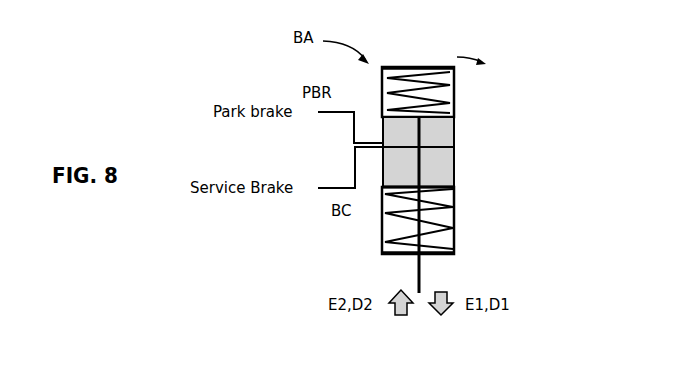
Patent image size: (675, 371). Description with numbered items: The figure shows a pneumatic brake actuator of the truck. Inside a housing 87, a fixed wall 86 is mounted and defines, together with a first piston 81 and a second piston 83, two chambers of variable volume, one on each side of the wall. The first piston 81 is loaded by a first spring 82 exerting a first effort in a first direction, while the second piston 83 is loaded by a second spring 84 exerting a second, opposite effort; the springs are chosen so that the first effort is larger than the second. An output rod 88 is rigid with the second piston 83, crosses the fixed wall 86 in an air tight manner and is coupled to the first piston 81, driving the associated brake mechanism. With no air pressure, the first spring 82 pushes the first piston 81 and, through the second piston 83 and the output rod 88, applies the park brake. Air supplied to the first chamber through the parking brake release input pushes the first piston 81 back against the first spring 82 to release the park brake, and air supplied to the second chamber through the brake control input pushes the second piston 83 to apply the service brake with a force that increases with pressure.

The first piston 81 is at (453, 112).
The first spring 82 is at (418, 76).
The second piston 83 is at (445, 188).
The second spring 84 is at (440, 213).
The fixed wall 86 is at (450, 145).
The housing 87 is at (382, 229).
The output rod 88 is at (423, 270).